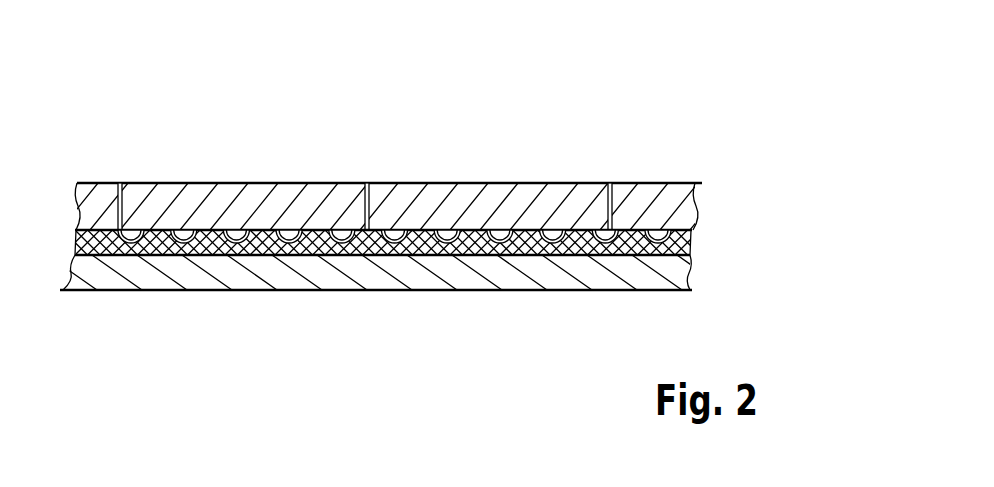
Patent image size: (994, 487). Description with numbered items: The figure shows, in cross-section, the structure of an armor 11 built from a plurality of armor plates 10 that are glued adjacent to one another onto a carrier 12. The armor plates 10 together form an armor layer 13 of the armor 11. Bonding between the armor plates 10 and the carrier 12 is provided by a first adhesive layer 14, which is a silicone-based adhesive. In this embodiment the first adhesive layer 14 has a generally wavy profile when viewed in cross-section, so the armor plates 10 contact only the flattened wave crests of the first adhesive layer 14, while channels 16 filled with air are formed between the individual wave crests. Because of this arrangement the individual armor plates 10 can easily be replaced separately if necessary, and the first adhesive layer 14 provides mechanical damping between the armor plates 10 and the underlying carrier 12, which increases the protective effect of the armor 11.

The armor plates 10 is at (111, 193).
The armor 11 is at (630, 78).
The carrier 12 is at (199, 280).
The armor layer 13 is at (716, 205).
The first adhesive layer 14 is at (334, 256).
The channels 16 is at (183, 228).